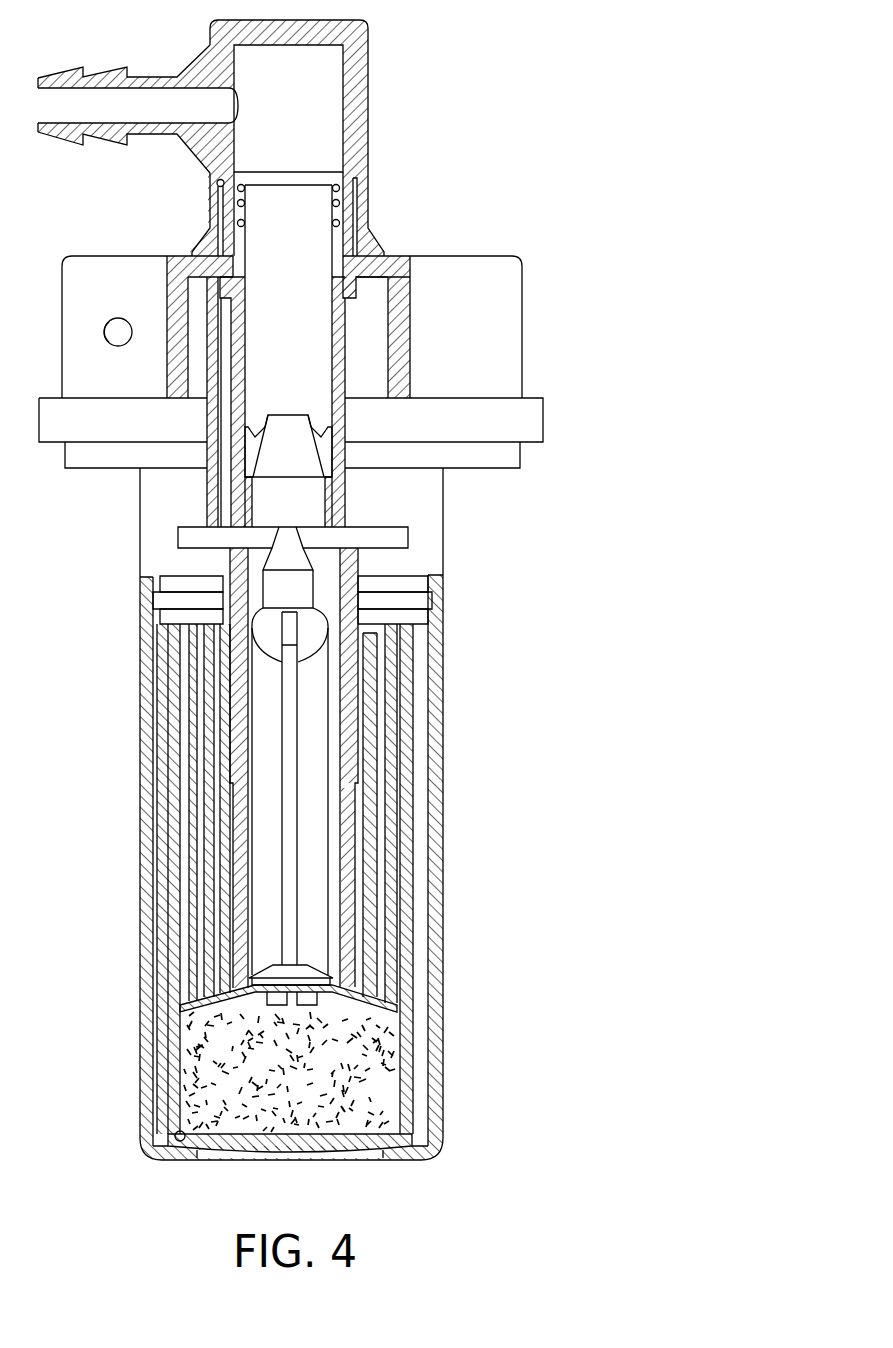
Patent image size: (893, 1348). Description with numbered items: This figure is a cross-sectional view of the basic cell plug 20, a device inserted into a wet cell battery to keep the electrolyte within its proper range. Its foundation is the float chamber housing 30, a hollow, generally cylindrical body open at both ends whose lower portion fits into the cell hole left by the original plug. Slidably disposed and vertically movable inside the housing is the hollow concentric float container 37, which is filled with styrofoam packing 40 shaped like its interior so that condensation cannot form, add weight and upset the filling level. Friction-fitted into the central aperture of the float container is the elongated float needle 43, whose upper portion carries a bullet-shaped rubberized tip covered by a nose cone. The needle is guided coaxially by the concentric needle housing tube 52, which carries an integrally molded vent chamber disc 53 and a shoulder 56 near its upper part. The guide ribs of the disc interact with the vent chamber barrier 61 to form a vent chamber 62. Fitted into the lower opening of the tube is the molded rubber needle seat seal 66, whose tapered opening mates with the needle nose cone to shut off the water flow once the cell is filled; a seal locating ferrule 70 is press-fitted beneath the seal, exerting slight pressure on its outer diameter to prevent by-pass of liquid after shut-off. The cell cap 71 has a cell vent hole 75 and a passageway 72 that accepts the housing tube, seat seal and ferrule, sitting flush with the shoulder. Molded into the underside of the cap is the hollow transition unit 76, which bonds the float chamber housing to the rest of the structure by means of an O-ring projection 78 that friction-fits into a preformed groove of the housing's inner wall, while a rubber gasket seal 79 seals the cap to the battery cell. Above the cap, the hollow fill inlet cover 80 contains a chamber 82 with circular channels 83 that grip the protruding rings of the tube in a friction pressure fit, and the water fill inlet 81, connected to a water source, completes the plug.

The basic cell plug 20 is at (311, 580).
The float chamber housing 30 is at (443, 752).
The float container 37 is at (413, 1040).
The styrofoam packing 40 is at (375, 1100).
The float needle 43 is at (340, 825).
The needle housing tube 52 is at (388, 368).
The vent chamber disc 53 is at (178, 537).
The shoulder 56 is at (412, 294).
The vent chamber barrier 61 is at (205, 479).
The vent chamber 62 is at (222, 414).
The needle seat seal 66 is at (341, 483).
The seal locating ferrule 70 is at (337, 511).
The cell cap 71 is at (323, 391).
The passageway 72 is at (384, 339).
The cell vent hole 75 is at (108, 318).
The transition unit 76 is at (400, 587).
The O-ring projection 78 is at (432, 600).
The rubber gasket seal 79 is at (522, 456).
The fill inlet cover 80 is at (368, 132).
The water fill inlet 81 is at (110, 146).
The chamber 82 is at (306, 119).
The circular channels 83 is at (334, 203).